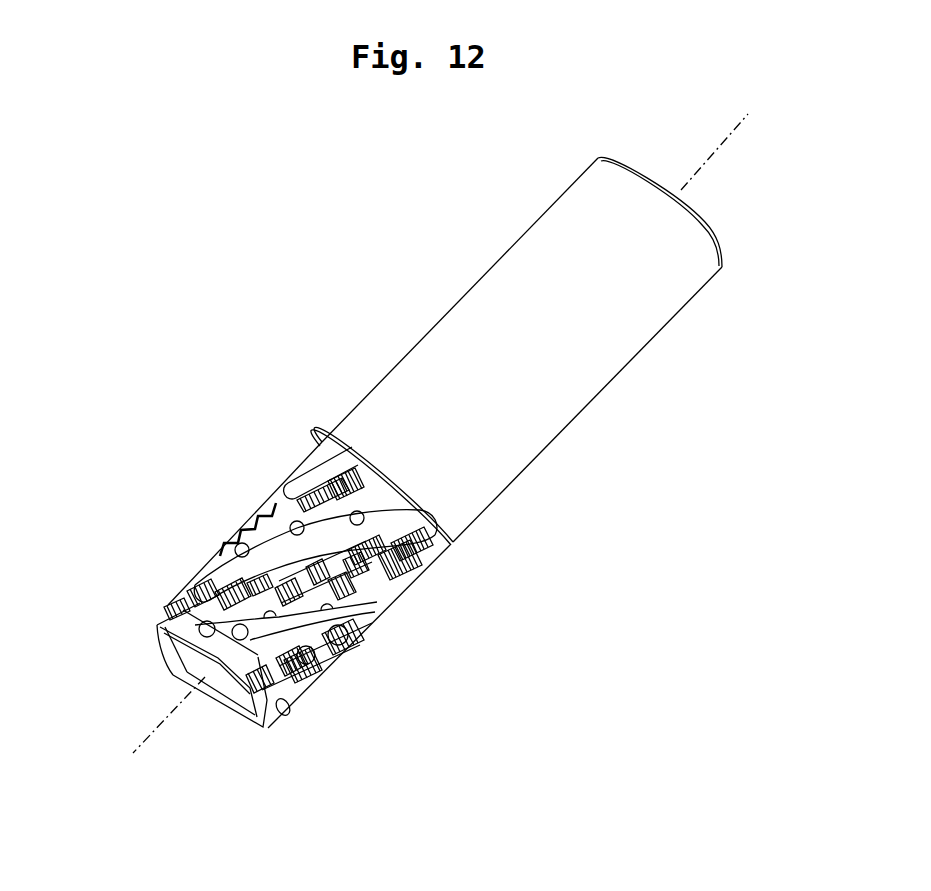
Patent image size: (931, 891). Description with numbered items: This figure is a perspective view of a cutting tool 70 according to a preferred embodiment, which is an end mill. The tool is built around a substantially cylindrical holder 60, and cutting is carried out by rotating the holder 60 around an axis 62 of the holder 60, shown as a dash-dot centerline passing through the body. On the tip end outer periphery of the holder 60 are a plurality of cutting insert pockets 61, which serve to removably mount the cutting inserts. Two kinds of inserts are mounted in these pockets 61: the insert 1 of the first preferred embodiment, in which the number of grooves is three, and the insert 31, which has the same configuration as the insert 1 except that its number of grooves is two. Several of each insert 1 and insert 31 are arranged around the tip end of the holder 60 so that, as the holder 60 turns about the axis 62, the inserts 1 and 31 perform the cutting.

The cutting tool 70 is at (384, 298).
The holder 60 is at (600, 350).
The axis 62 is at (731, 131).
The cutting insert pocket 61 is at (160, 643).
The insert 31 is at (214, 566).
The insert 1 is at (325, 485).